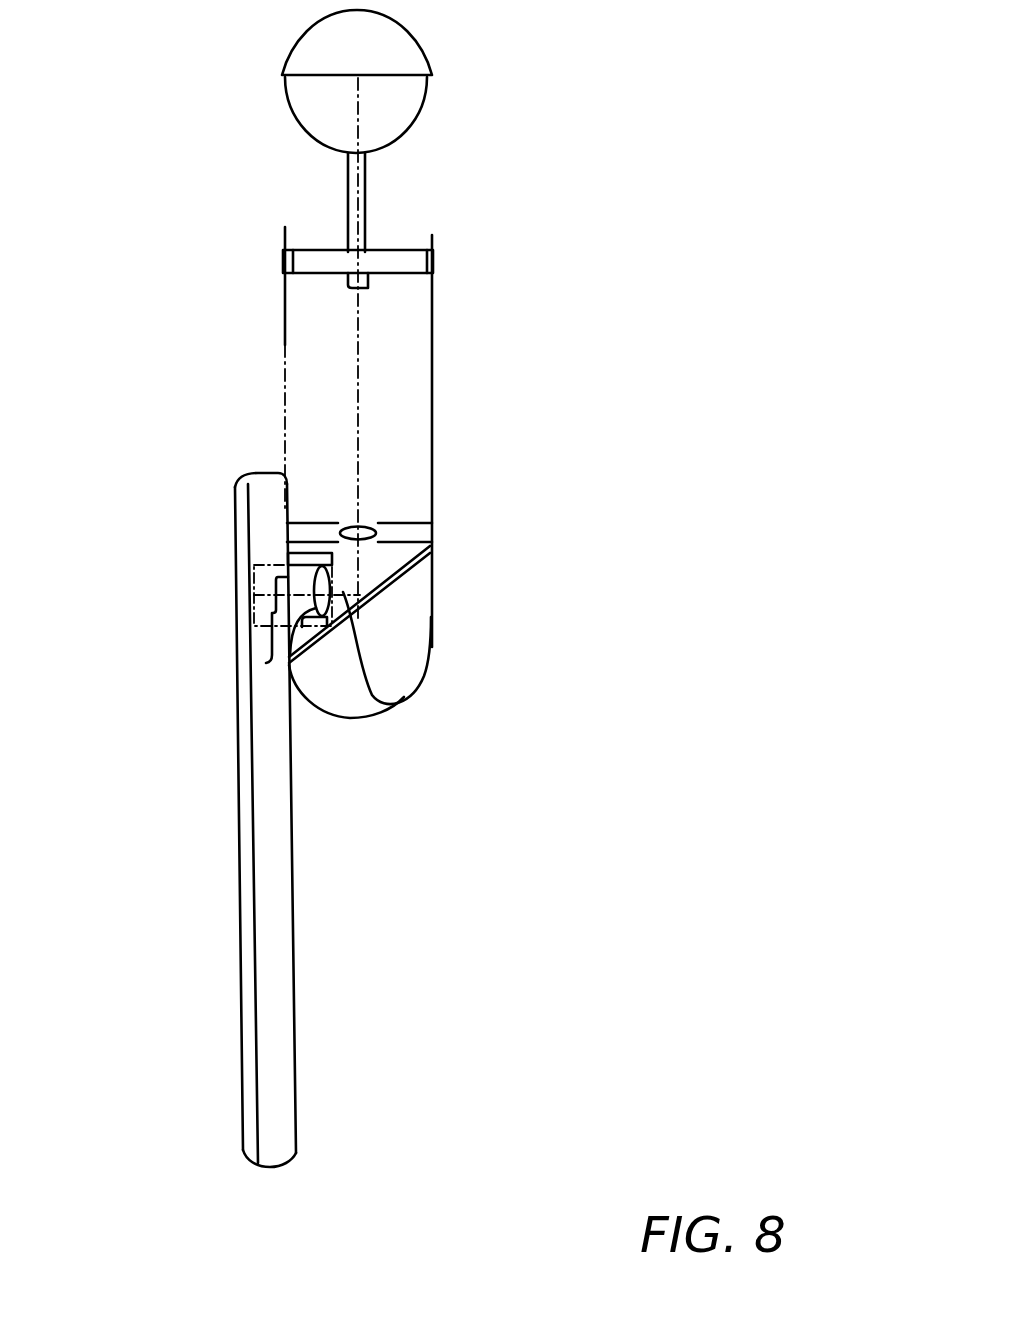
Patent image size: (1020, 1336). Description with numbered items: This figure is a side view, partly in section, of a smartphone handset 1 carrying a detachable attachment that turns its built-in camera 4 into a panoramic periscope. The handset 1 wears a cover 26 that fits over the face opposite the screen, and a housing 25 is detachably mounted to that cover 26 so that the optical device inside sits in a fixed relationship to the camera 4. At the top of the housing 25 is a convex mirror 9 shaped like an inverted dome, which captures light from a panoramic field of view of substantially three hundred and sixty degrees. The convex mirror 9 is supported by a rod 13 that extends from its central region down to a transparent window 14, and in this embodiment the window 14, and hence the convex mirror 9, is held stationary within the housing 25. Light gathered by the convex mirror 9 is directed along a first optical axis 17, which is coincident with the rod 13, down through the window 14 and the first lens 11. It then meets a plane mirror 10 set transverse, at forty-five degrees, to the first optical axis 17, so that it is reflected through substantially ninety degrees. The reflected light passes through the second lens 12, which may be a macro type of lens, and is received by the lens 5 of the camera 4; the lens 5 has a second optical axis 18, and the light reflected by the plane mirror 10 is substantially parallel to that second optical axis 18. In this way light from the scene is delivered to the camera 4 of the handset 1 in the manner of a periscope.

The handset 1 is at (245, 1103).
The camera 4 is at (252, 586).
The lens 5 is at (267, 660).
The convex mirror 9 is at (422, 98).
The plane mirror 10 is at (415, 568).
The first lens 11 is at (363, 520).
The second lens 12 is at (290, 670).
The rod 13 is at (347, 172).
The transparent window 14 is at (312, 249).
The first optical axis 17 is at (360, 383).
The second optical axis 18 is at (401, 698).
The housing 25 is at (430, 632).
The cover 26 is at (297, 1128).